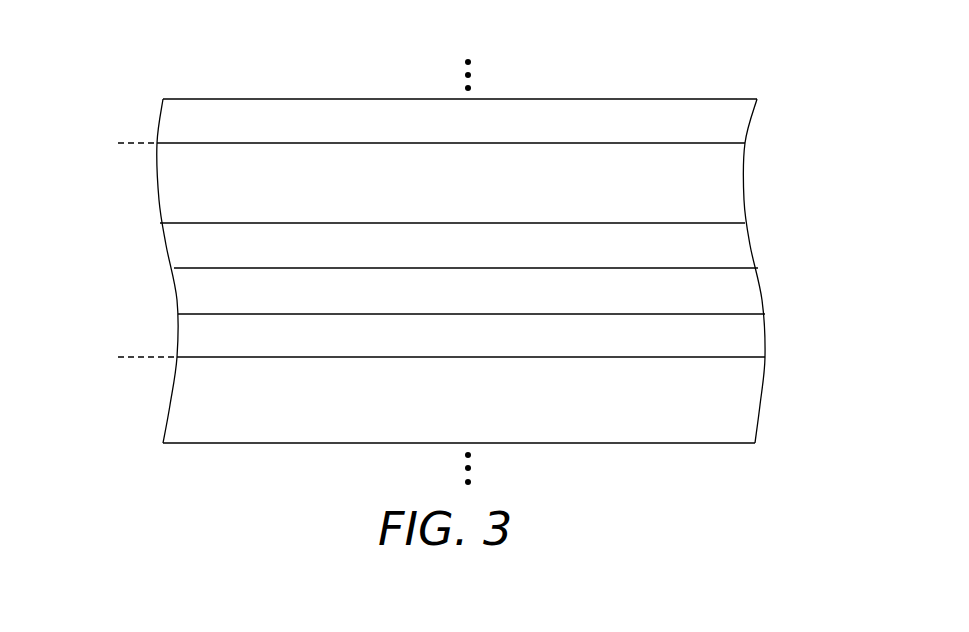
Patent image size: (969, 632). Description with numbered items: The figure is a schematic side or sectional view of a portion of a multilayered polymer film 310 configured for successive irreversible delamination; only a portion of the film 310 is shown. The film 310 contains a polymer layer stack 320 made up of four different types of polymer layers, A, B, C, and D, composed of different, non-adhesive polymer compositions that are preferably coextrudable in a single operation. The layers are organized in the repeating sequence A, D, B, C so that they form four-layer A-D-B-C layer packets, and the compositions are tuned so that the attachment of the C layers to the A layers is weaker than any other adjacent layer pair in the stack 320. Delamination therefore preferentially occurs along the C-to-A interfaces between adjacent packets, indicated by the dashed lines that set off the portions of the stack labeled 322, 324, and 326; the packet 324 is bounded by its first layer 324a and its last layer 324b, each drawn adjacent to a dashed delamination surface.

The multilayered polymer film 310 is at (136, 27).
The polymer layer stack 320 is at (795, 477).
The first layer group 322 is at (118, 53).
The middle layer group 324 is at (118, 148).
The first layer of middle group 324a is at (603, 143).
The last layer of middle group 324b is at (620, 357).
The last layer group 326 is at (118, 367).